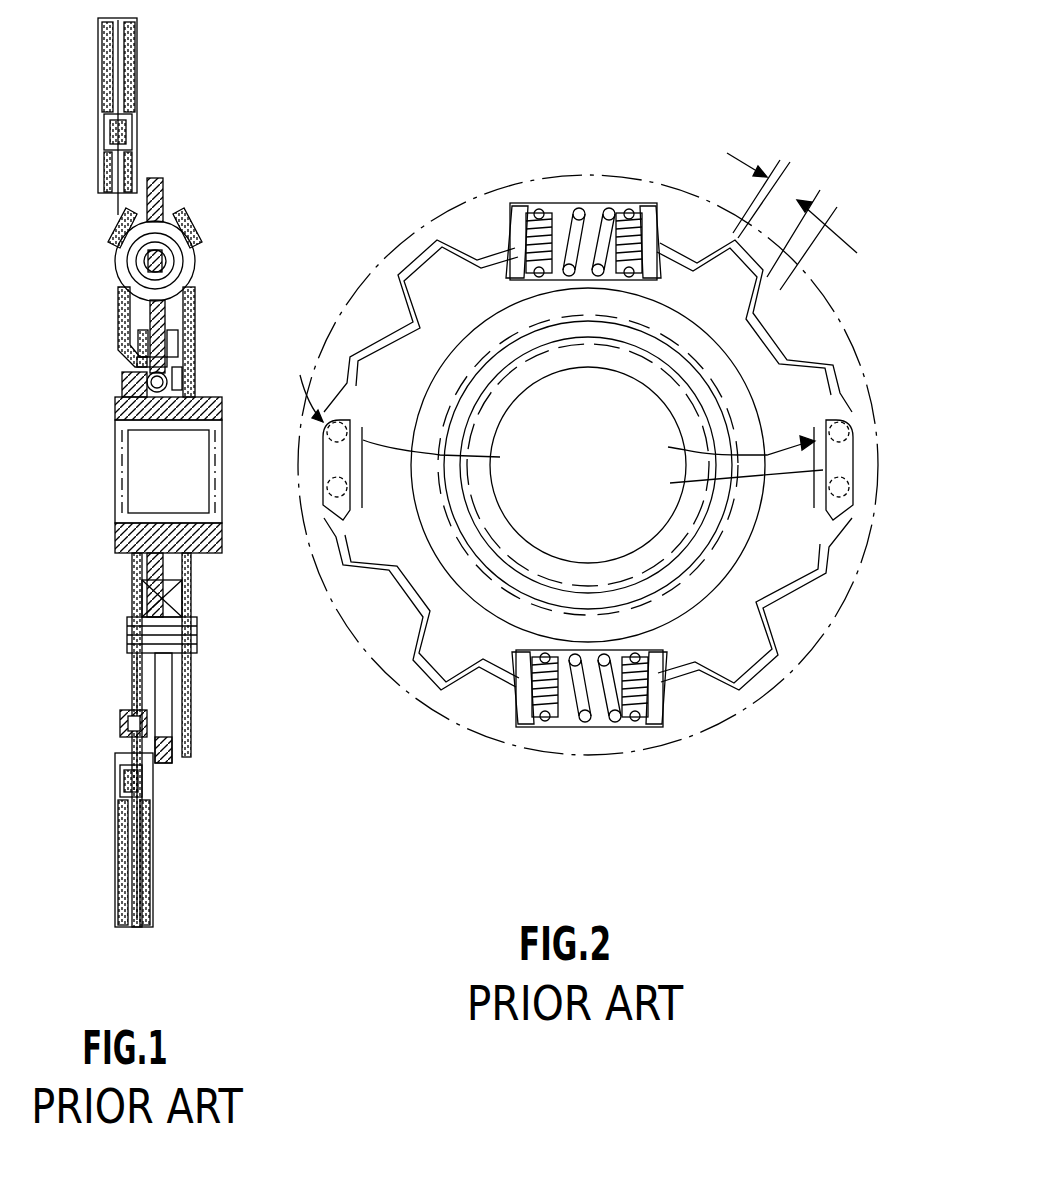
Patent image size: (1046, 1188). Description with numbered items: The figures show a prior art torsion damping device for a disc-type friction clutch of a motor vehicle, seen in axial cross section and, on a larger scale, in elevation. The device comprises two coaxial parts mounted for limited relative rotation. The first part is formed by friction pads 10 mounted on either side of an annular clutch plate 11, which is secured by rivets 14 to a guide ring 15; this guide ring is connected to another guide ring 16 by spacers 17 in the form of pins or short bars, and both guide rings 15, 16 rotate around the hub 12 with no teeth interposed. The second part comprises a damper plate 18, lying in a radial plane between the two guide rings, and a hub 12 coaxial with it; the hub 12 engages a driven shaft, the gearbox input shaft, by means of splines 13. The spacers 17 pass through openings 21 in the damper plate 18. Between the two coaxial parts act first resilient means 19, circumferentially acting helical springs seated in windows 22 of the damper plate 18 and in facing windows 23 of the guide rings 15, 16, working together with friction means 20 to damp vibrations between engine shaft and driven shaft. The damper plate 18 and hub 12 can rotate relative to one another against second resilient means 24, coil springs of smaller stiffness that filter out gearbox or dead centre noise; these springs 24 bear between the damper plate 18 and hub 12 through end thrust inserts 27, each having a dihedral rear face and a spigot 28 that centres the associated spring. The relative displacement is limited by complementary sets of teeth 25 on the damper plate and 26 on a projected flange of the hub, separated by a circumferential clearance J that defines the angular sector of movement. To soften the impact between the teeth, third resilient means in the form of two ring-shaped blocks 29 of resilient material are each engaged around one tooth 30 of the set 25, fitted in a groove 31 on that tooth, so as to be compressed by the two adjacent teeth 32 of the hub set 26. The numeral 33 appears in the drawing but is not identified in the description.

In FIG. 1, the friction pads 10 is at (100, 60).
In FIG. 1, the clutch plate 11 is at (107, 180).
In FIG. 1, the hub 12 is at (197, 407).
In FIG. 2, the hub 12 is at (568, 294).
In FIG. 1, the splines 13 is at (127, 447).
In FIG. 2, the splines 13 is at (527, 548).
In FIG. 1, the rivets 14 is at (120, 723).
In FIG. 1, the guide ring 15 is at (120, 315).
In FIG. 1, the guide ring 16 is at (183, 320).
In FIG. 1, the spacers 17 is at (190, 613).
In FIG. 1, the damper plate 18 is at (155, 176).
In FIG. 2, the damper plate 18 is at (567, 190).
In FIG. 1, the first resilient means 19 is at (183, 263).
In FIG. 1, the friction means 20 is at (178, 345).
In FIG. 1, the openings 21 is at (163, 697).
In FIG. 1, the windows 22 is at (163, 217).
In FIG. 1, the windows 23 is at (117, 227).
In FIG. 1, the second resilient means 24 is at (137, 373).
In FIG. 2, the second resilient means 24 is at (594, 200).
In FIG. 2, the set of teeth 25 is at (405, 330).
In FIG. 2, the set of teeth 26 is at (417, 267).
In FIG. 2, the end thrust inserts 27 is at (513, 223).
In FIG. 2, the spigot 28 is at (537, 213).
In FIG. 2, the blocks 29 is at (547, 403).
In FIG. 2, the tooth 30 is at (593, 465).
In FIG. 2, the groove 31 is at (333, 492).
In FIG. 2, the teeth 32 is at (340, 345).
In FIG. 2, the pawl 33 is at (340, 428).
In FIG. 2, the circumferential clearance J is at (793, 209).